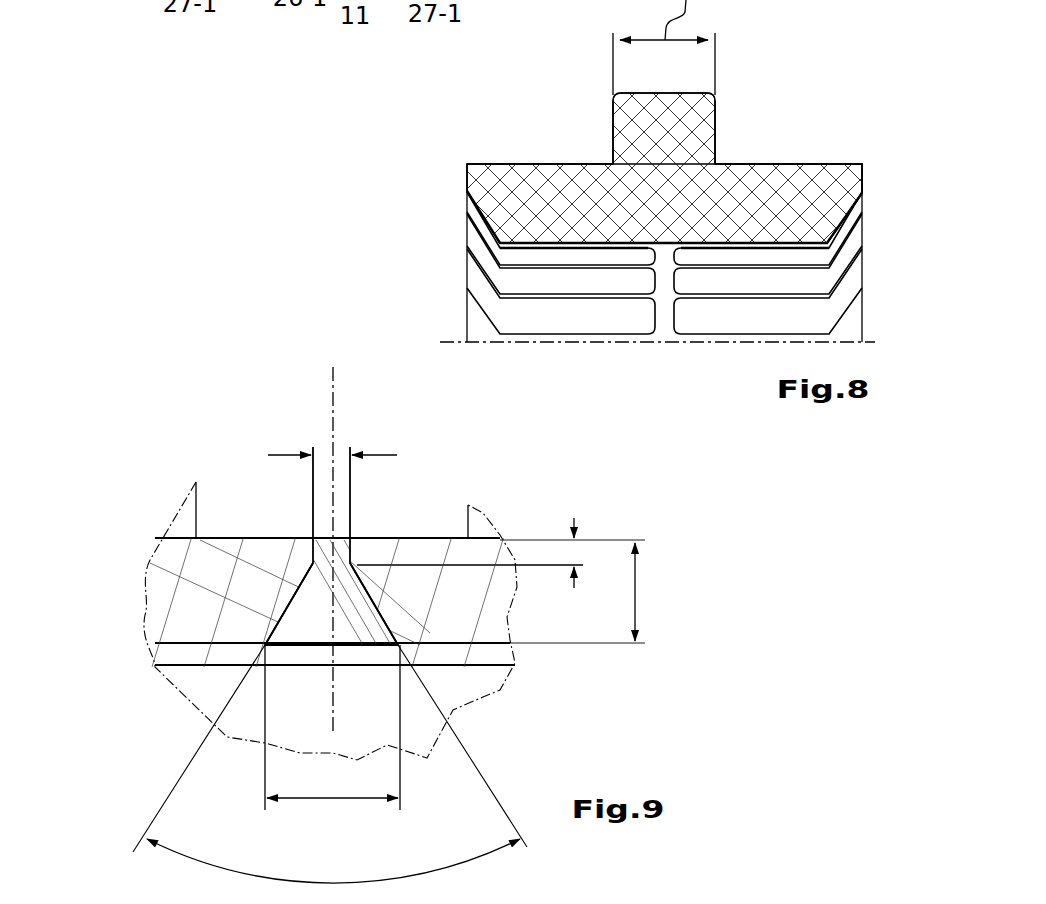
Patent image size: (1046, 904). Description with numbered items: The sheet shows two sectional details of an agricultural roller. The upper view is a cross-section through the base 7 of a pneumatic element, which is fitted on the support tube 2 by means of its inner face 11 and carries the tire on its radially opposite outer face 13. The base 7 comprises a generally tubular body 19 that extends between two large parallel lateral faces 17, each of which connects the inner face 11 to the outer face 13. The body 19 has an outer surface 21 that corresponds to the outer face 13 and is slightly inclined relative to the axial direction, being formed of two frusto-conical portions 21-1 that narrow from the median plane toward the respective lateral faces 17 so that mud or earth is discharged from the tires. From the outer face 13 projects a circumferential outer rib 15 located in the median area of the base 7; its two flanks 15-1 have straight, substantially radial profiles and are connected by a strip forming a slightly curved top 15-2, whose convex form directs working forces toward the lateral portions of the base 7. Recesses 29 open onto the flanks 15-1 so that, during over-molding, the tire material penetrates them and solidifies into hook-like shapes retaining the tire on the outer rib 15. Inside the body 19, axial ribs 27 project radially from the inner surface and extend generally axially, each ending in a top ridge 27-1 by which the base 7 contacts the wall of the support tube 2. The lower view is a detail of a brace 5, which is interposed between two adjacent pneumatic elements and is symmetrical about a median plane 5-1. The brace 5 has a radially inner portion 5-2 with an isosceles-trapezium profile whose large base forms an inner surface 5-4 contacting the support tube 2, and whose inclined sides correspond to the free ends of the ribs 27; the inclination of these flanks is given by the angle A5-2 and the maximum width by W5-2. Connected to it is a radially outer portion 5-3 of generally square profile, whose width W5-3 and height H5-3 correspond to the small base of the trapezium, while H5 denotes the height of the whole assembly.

In FIG. 9, the support tube 2 is at (480, 657).
In FIG. 9, the brace 5 is at (398, 595).
In FIG. 9, the median plane 5-1 is at (332, 403).
In FIG. 9, the inner portion 5-2 is at (317, 607).
In FIG. 9, the outer portion 5-3 is at (340, 554).
In FIG. 9, the inner surface 5-4 is at (287, 650).
In FIG. 8, the base 7 is at (467, 207).
In FIG. 8, the inner face 11 is at (666, 252).
In FIG. 8, the outer face 13 is at (834, 126).
In FIG. 8, the outer rib 15 is at (686, 130).
In FIG. 8, the flank 15-1 is at (610, 125).
In FIG. 8, the top 15-2 is at (677, 90).
In FIG. 8, the lateral face 17 is at (460, 263).
In FIG. 8, the body 19 is at (813, 182).
In FIG. 8, the outer surface 21 is at (481, 158).
In FIG. 8, the frusto-conical portion 21-1 is at (503, 164).
In FIG. 8, the axial rib 27 is at (810, 222).
In FIG. 9, the axial rib 27 is at (249, 562).
In FIG. 8, the top ridge 27-1 is at (740, 256).
In FIG. 8, the recess 29 is at (467, 222).
In FIG. 9, the width of the outer portion W5-3 is at (342, 452).
In FIG. 9, the maximum width of the inner portion W5-2 is at (341, 800).
In FIG. 9, the inclination of the flanks A5-2 is at (333, 883).
In FIG. 9, the height of the assembly H5 is at (636, 590).
In FIG. 9, the height of the outer portion H5-3 is at (580, 553).